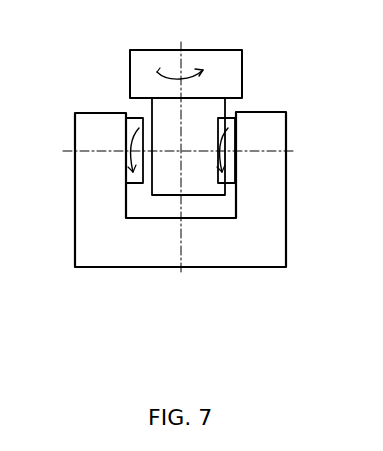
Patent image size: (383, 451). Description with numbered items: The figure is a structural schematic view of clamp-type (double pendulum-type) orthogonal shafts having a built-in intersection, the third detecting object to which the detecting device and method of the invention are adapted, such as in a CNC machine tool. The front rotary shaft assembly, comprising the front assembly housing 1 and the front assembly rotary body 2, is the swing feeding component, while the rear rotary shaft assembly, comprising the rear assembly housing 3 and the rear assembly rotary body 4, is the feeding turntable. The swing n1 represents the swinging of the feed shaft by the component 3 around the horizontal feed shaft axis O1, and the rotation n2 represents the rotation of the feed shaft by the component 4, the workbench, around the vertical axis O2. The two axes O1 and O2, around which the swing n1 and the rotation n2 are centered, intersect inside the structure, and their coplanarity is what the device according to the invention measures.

The front assembly housing 1 is at (252, 247).
The front assembly rotary body 2 is at (139, 122).
The rear assembly housing 3 is at (205, 115).
The rear assembly rotary body 4 is at (225, 65).
The swing of the feed shaft n1 is at (217, 160).
The rotation of the feed shaft n2 is at (175, 72).
The feed shaft axis O1O1 O1 is at (183, 153).
The feed shaft axis O2O2 O2 is at (183, 155).